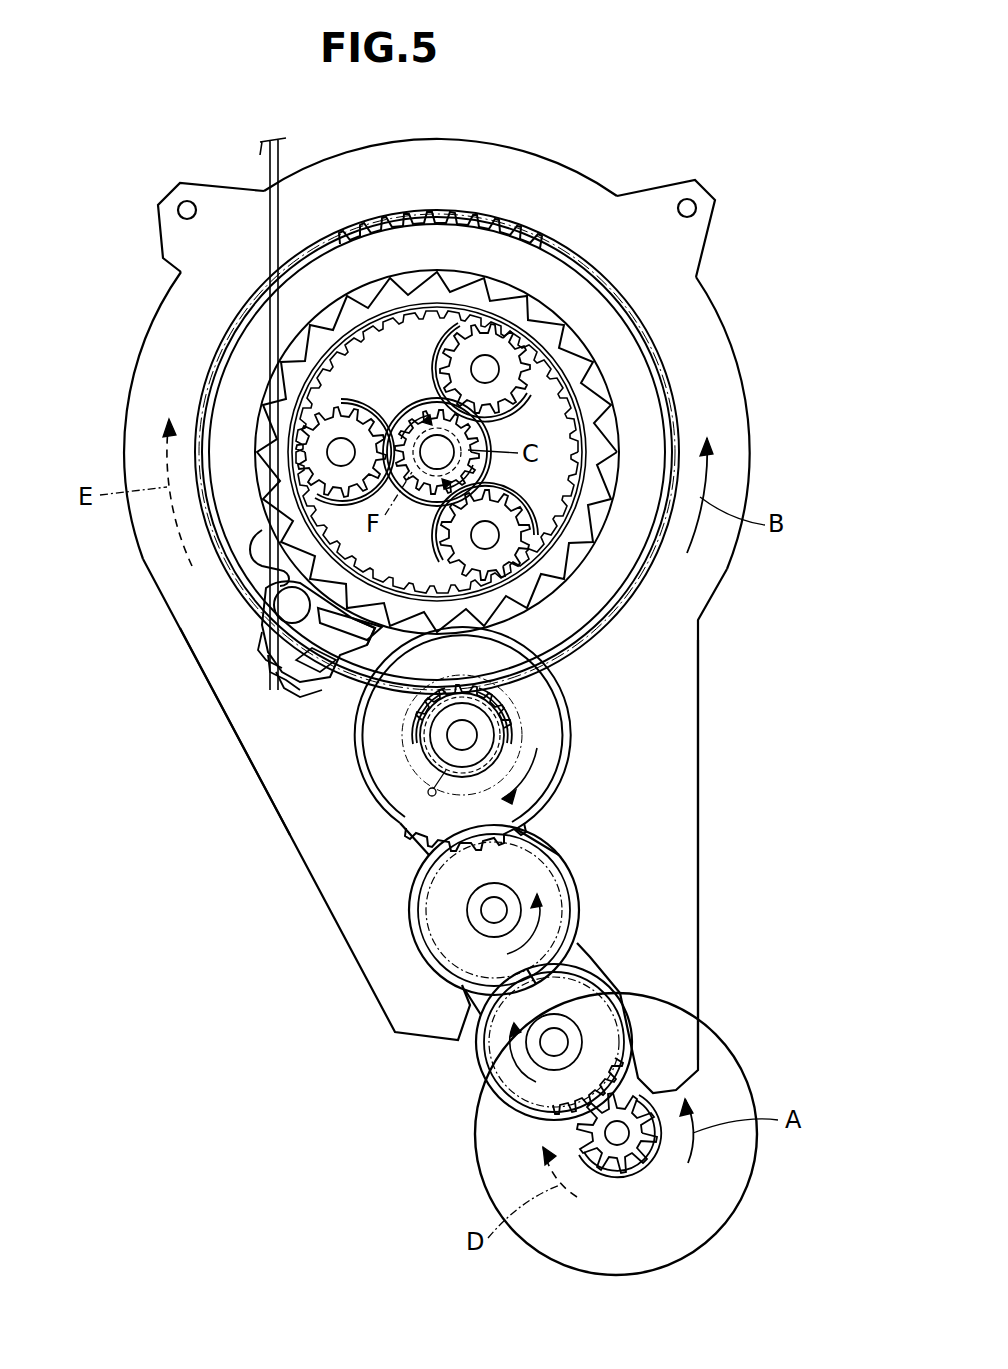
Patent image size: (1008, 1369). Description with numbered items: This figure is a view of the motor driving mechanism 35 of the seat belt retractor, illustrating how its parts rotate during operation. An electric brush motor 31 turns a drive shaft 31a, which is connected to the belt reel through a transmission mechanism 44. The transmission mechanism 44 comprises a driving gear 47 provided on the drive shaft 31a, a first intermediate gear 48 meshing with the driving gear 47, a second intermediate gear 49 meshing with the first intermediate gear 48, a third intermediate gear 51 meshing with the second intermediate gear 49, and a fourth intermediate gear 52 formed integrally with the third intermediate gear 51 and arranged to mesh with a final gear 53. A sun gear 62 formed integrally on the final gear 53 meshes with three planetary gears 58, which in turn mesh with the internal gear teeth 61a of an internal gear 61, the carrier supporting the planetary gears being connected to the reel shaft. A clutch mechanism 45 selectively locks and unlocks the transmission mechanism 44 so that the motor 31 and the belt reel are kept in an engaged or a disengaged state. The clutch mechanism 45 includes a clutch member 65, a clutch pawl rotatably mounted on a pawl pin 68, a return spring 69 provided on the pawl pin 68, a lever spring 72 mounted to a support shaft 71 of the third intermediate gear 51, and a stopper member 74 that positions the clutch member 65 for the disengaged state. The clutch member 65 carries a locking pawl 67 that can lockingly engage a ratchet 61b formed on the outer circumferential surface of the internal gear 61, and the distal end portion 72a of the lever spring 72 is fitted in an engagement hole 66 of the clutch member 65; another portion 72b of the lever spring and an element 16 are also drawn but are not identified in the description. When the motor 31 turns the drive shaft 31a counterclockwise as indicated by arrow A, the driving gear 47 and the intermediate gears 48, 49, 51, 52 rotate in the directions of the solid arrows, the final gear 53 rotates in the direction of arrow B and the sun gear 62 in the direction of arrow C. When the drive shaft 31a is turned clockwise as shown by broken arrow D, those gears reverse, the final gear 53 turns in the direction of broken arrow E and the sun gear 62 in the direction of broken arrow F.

The rod 16 is at (270, 240).
The electric brush motor 31 is at (740, 1178).
The drive shaft 31a is at (617, 1146).
The motor driving mechanism 35 is at (750, 218).
The transmission mechanism 44 is at (668, 666).
The clutch mechanism 45 is at (238, 796).
The driving gear 47 is at (652, 1160).
The first intermediate gear 48 is at (476, 1060).
The second intermediate gear 49 is at (575, 900).
The third intermediate gear 51 is at (565, 790).
The fourth intermediate gear 52 is at (520, 735).
The final gear 53 is at (655, 337).
The planetary gears 58 is at (322, 425).
The internal gear 61 is at (465, 287).
The internal gear teeth 61a is at (405, 337).
The ratchet teeth of ring gear 61b is at (507, 297).
The sun gear 62 is at (492, 464).
The clutch member 65 is at (273, 640).
The engagement hole 66 is at (278, 654).
The locking pawl 67 is at (370, 630).
The pawl pin 68 is at (274, 604).
The return spring 69 is at (253, 578).
The support shaft 71 is at (425, 752).
The lever spring 72 is at (370, 692).
The distal end portion 72a is at (318, 670).
The spring hook 72b is at (462, 783).
The stopper member 74 is at (288, 676).